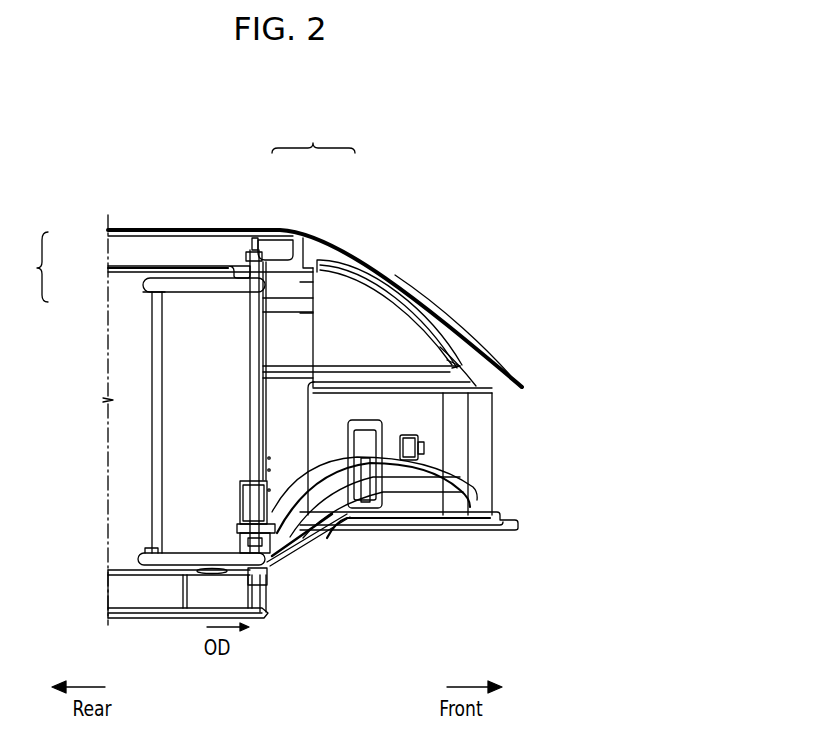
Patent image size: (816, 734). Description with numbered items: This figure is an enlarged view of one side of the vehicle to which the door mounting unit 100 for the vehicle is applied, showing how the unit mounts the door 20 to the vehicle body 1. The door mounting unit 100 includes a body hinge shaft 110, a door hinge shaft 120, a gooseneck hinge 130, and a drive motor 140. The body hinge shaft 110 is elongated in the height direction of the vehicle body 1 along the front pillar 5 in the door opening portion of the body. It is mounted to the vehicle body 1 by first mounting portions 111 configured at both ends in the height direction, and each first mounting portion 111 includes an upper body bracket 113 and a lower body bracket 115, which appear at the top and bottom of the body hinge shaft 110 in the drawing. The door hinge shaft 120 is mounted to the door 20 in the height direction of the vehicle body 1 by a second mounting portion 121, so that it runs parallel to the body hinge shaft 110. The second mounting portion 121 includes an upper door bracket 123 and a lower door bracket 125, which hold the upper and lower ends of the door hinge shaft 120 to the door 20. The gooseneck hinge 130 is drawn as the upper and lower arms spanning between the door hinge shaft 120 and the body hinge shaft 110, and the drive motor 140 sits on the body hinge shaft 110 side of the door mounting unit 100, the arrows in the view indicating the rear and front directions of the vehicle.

The vehicle body 1 is at (413, 307).
The front pillar 5 is at (293, 467).
The door 20 is at (120, 364).
The door mounting unit 100 is at (216, 252).
The body hinge shaft 110 is at (253, 328).
The first mounting portion 111 is at (313, 138).
The upper body bracket 113 is at (262, 236).
The lower body bracket 115 is at (313, 612).
The door hinge shaft 120 is at (155, 440).
The second mounting portion 121 is at (27, 267).
The upper door bracket 123 is at (127, 283).
The lower door bracket 125 is at (130, 554).
The gooseneck hinge 130 is at (180, 285).
The drive motor 140 is at (253, 500).